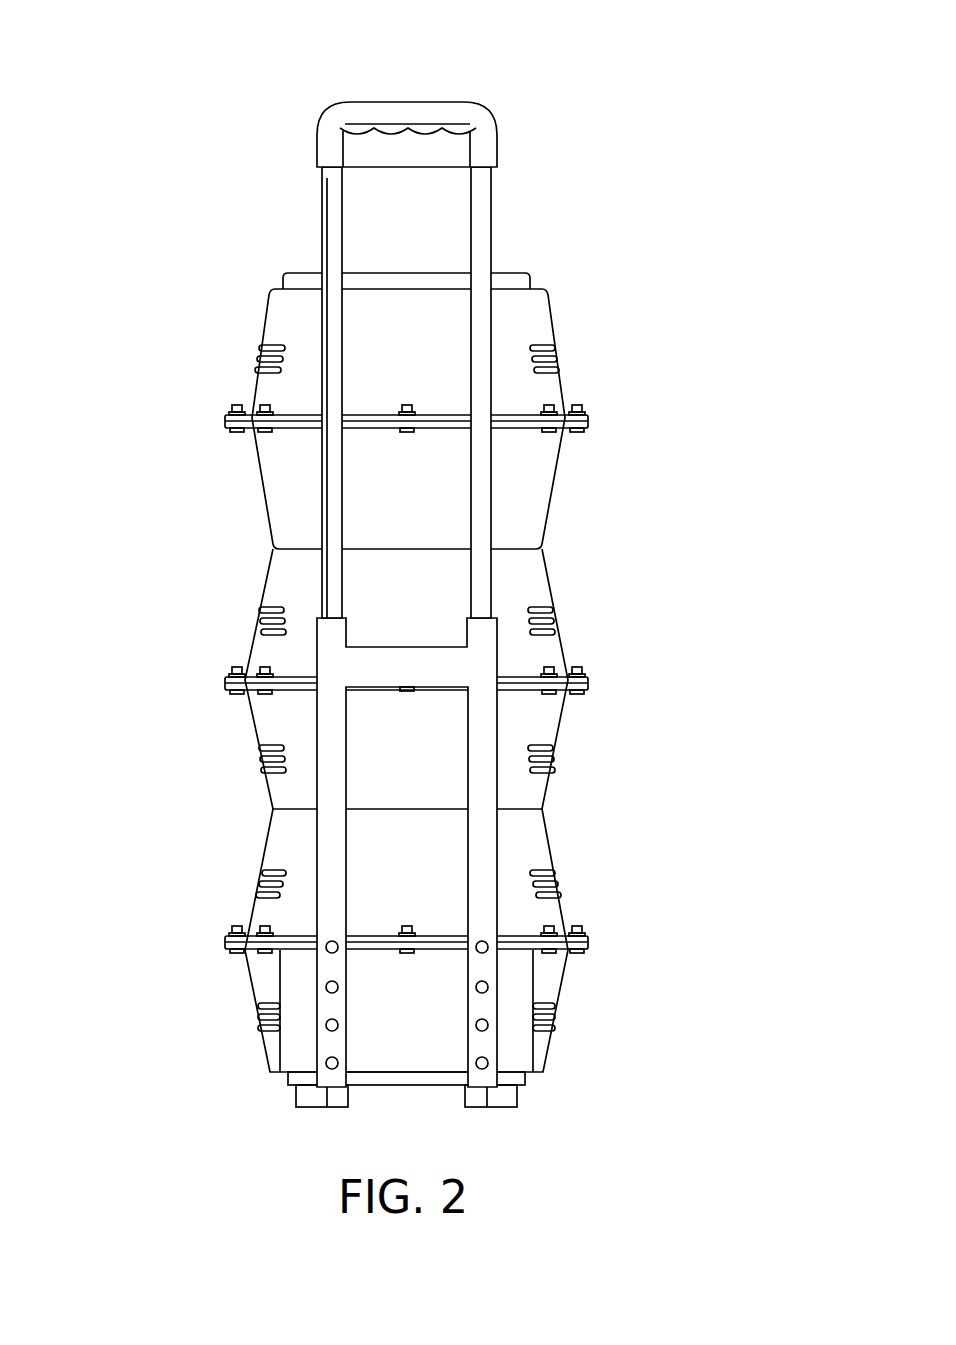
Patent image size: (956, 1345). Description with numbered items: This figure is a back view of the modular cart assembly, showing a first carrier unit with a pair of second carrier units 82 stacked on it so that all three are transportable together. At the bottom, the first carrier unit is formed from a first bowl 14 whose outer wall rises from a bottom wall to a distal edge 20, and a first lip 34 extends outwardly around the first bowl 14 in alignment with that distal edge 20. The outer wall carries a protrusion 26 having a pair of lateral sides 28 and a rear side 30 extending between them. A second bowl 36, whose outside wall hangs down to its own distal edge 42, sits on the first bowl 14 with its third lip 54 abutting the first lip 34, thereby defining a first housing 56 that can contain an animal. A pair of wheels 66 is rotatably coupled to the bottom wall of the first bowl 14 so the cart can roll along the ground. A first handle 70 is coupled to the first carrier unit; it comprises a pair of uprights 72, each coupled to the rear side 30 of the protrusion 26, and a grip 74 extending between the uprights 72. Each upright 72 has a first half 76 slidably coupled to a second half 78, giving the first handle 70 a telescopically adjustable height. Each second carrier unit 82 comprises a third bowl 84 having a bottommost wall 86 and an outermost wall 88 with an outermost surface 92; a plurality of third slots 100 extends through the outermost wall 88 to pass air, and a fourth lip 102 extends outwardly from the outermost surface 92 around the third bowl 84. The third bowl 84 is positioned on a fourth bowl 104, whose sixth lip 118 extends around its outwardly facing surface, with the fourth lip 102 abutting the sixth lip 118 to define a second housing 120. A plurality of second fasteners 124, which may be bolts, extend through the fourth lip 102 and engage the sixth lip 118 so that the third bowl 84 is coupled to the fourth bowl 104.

The first bowl 14 is at (561, 993).
The distal edge 20 is at (527, 933).
The protrusion 26 is at (280, 1047).
The lateral sides 28 is at (282, 975).
The rear side 30 is at (383, 1063).
The first lip 34 is at (560, 952).
The second bowl 36 is at (262, 848).
The distal edge 42 is at (290, 946).
The third lip 54 is at (287, 937).
The first housing 56 is at (570, 858).
The wheels 66 is at (310, 1107).
The first handle 70 is at (524, 190).
The uprights 72 is at (472, 228).
The grip 74 is at (400, 102).
The first half 76 is at (512, 721).
The second half 78 is at (512, 460).
The second carrier units 82 is at (194, 671).
The third bowl 84 is at (258, 738).
The bottommost wall 86 is at (507, 811).
The outermost wall 88 is at (305, 773).
The outermost surface 92 is at (430, 738).
The third slots 100 is at (258, 757).
The fourth lip 102 is at (290, 690).
The fourth bowl 104 is at (548, 578).
The sixth lip 118 is at (300, 673).
The second housing 120 is at (246, 571).
The second fasteners 124 is at (551, 407).